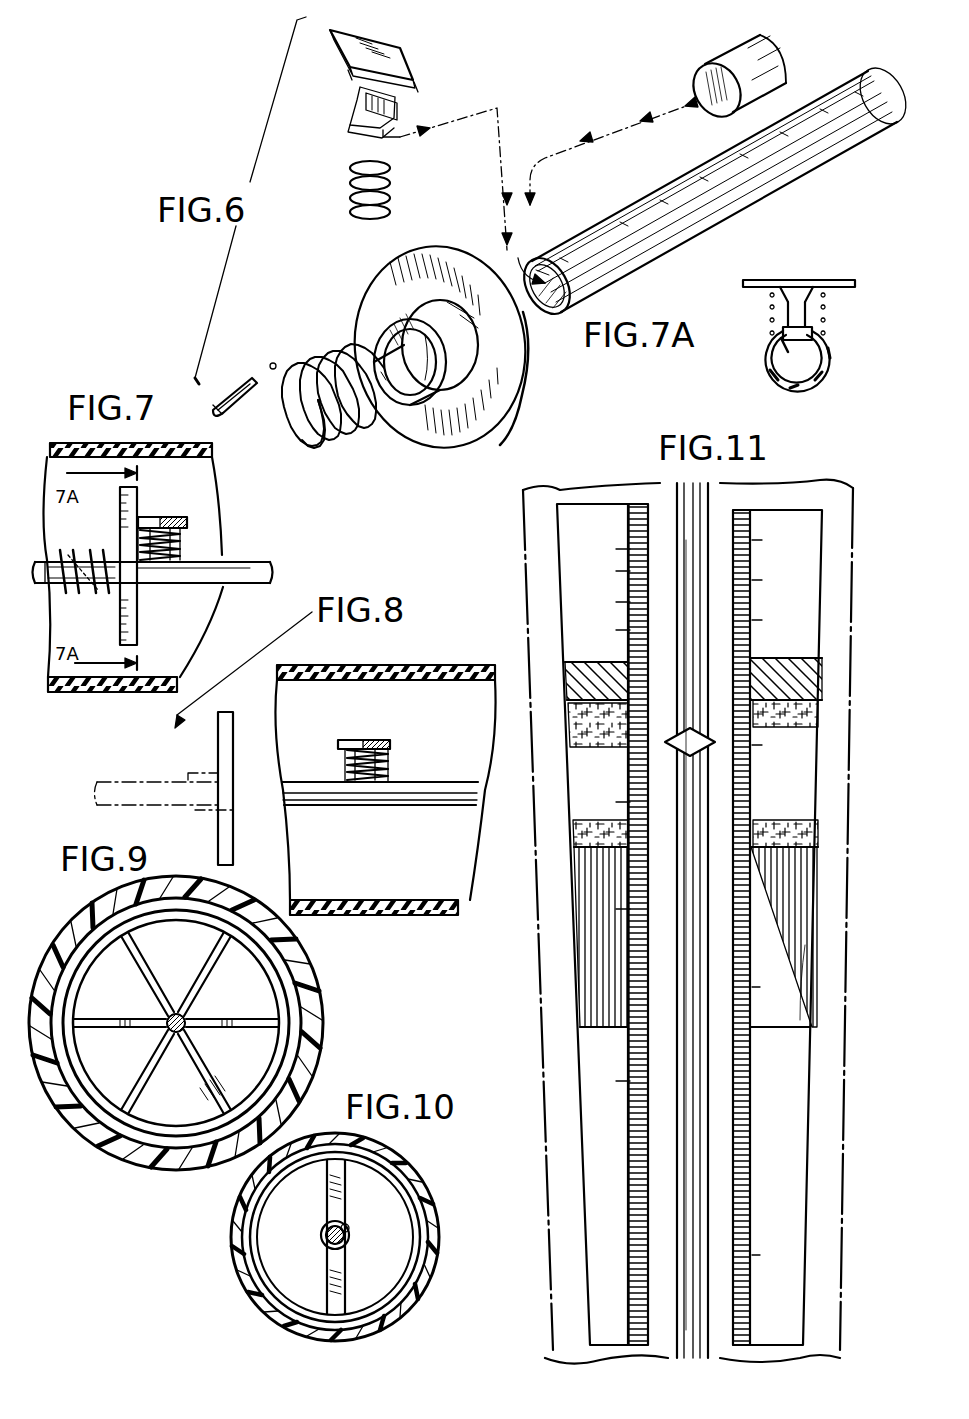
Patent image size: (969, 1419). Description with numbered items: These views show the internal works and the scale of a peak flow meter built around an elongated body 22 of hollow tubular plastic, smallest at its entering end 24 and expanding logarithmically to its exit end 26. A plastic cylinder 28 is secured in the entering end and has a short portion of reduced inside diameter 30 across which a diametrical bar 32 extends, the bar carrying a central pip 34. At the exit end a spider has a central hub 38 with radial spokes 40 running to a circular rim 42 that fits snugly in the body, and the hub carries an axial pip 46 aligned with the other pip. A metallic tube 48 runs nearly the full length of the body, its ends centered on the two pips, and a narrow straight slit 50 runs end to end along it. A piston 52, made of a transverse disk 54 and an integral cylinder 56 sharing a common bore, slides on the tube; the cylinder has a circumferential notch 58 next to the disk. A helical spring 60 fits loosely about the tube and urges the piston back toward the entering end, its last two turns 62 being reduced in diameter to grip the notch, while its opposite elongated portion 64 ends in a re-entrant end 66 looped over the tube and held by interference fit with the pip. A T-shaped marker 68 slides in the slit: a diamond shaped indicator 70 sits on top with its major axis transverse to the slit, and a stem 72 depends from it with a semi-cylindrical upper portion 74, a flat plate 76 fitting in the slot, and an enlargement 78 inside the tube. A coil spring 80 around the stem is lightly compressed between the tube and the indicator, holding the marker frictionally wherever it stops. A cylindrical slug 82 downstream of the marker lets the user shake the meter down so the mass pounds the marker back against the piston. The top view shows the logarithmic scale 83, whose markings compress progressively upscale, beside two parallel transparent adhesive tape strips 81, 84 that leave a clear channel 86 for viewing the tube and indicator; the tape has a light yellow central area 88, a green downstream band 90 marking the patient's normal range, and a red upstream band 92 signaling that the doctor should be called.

In FIG. 9, the elongated body 22 is at (198, 1023).
In FIG. 10, the elongated body 22 is at (356, 1237).
In FIG. 11, the elongated body 22 is at (850, 1070).
In FIG. 10, the entering end 24 is at (435, 1220).
In FIG. 9, the exit end 26 is at (315, 1052).
In FIG. 10, the plastic cylinder 28 is at (413, 1195).
In FIG. 10, the portion of reduced inside diameter 30 is at (415, 1245).
In FIG. 10, the diametrical bar 32 is at (344, 1277).
In FIG. 10, the pip 34 is at (348, 1232).
In FIG. 9, the central hub 38 is at (150, 1040).
In FIG. 9, the radial arms or spokes 40 is at (218, 1082).
In FIG. 9, the circular rim 42 is at (290, 988).
In FIG. 9, the pip 46 is at (190, 1018).
In FIG. 6, the metallic tube 48 is at (715, 191).
In FIG. 7A, the metallic tube 48 is at (828, 375).
In FIG. 7, the metallic tube 48 is at (258, 565).
In FIG. 8, the metallic tube 48 is at (430, 780).
In FIG. 10, the metallic tube 48 is at (346, 1240).
In FIG. 11, the metallic tube 48 is at (712, 1052).
In FIG. 6, the slit 50 is at (610, 220).
In FIG. 11, the slit 50 is at (710, 823).
In FIG. 6, the piston 52 is at (444, 340).
In FIG. 7, the piston 52 is at (113, 569).
In FIG. 8, the piston 52 is at (225, 736).
In FIG. 6, the transverse disk 54 is at (508, 385).
In FIG. 7, the transverse disk 54 is at (137, 628).
In FIG. 6, the integral cylinder 56 is at (385, 322).
In FIG. 6, the circumferential notch 58 is at (455, 300).
In FIG. 6, the helical spring 60 is at (343, 422).
In FIG. 7, the helical spring 60 is at (66, 590).
In FIG. 10, the helical spring 60 is at (325, 1226).
In FIG. 6, the reduced diameter turns 62 is at (383, 407).
In FIG. 7, the reduced diameter turns 62 is at (110, 595).
In FIG. 6, the elongated portion 64 is at (235, 385).
In FIG. 6, the re-entrant end 66 is at (225, 413).
In FIG. 6, the marker 68 is at (389, 84).
In FIG. 7A, the marker 68 is at (801, 333).
In FIG. 7, the marker 68 is at (202, 519).
In FIG. 8, the marker 68 is at (362, 734).
In FIG. 6, the diamond shaped indicator 70 is at (403, 46).
In FIG. 7A, the diamond shaped indicator 70 is at (828, 280).
In FIG. 7, the diamond shaped indicator 70 is at (172, 506).
In FIG. 8, the diamond shaped indicator 70 is at (352, 740).
In FIG. 11, the diamond shaped indicator 70 is at (700, 745).
In FIG. 6, the stem 72 is at (352, 100).
In FIG. 7A, the stem 72 is at (810, 312).
In FIG. 7, the stem 72 is at (185, 545).
In FIG. 8, the stem 72 is at (345, 772).
In FIG. 6, the semi-cylindrical upper portion 74 is at (348, 76).
In FIG. 7A, the semi-cylindrical upper portion 74 is at (796, 292).
In FIG. 6, the flat plate 76 is at (350, 133).
In FIG. 7A, the flat plate 76 is at (765, 355).
In FIG. 6, the enlargement 78 is at (398, 110).
In FIG. 7A, the enlargement 78 is at (797, 342).
In FIG. 6, the coil spring 80 is at (392, 182).
In FIG. 7A, the coil spring 80 is at (830, 322).
In FIG. 7, the coil spring 80 is at (170, 570).
In FIG. 8, the coil spring 80 is at (388, 770).
In FIG. 11, the adhesive tape strip 81 is at (675, 924).
In FIG. 6, the cylindrical slug 82 is at (727, 62).
In FIG. 11, the logarithmic scale 83 is at (745, 1215).
In FIG. 11, the adhesive tape strip 84 is at (811, 920).
In FIG. 11, the clear channel 86 is at (722, 912).
In FIG. 11, the central colored area 88 is at (812, 822).
In FIG. 11, the downstream band 90 is at (812, 680).
In FIG. 11, the upstream band 92 is at (800, 948).